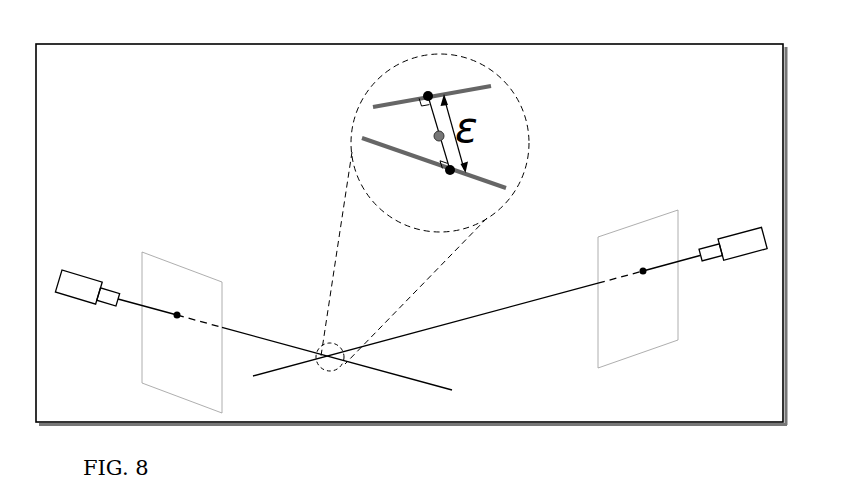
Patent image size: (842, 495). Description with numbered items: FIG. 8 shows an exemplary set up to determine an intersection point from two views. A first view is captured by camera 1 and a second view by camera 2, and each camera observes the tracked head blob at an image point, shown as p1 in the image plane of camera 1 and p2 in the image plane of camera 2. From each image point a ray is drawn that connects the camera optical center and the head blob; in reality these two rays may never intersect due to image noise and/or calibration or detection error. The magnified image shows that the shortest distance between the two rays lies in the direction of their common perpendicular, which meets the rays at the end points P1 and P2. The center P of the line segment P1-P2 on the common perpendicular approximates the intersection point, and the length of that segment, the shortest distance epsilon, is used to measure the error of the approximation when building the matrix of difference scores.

The camera 1 is at (88, 276).
The camera 2 is at (732, 227).
The image point p1 on image plane of camera 1 p1 is at (182, 332).
The image point p2 on image plane of camera 2 p2 is at (638, 289).
The end point of the common-perpendicular line segment P1 is at (450, 187).
The end point of the common-perpendicular line segment P2 is at (425, 82).
The approximate intersection point P is at (428, 130).